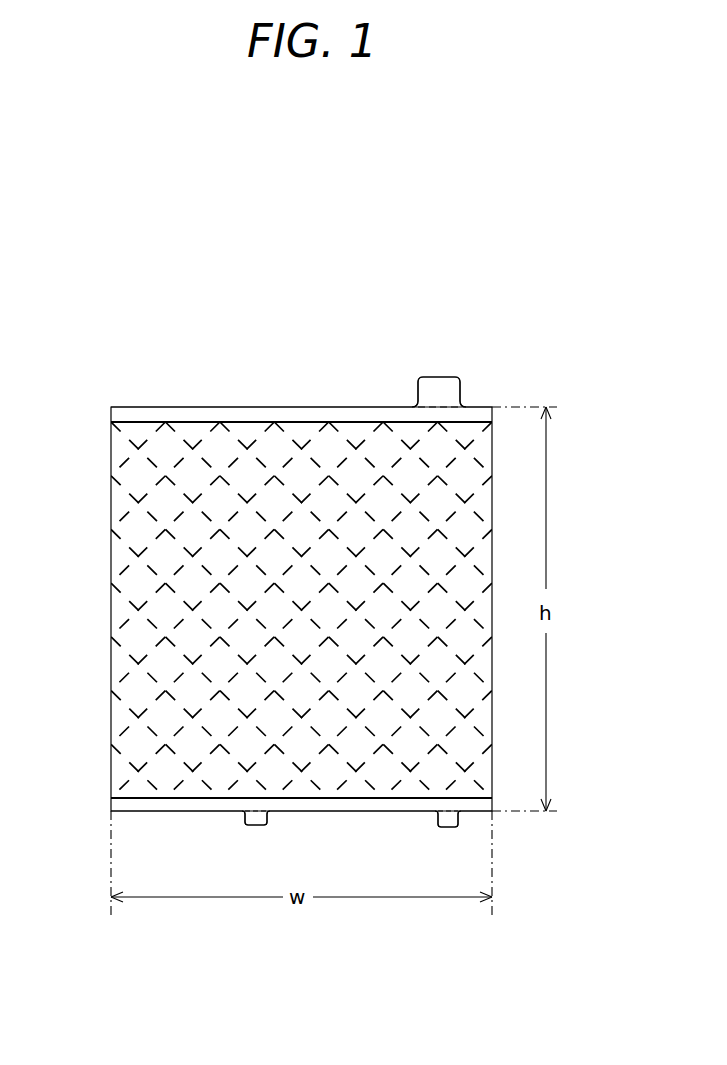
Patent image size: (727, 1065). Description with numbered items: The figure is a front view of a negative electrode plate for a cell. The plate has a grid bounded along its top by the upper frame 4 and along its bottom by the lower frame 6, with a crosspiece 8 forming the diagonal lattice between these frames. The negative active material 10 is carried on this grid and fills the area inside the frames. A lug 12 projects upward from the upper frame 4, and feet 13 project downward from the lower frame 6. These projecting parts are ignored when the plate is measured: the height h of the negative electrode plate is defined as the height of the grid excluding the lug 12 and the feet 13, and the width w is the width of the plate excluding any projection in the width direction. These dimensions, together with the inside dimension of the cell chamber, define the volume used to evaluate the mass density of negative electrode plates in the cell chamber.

The upper frame 4 is at (257, 408).
The lower frame 6 is at (350, 806).
The crosspiece 8 is at (128, 602).
The negative active material 10 is at (487, 500).
The lug 12 is at (440, 387).
The foot 13 is at (258, 818).